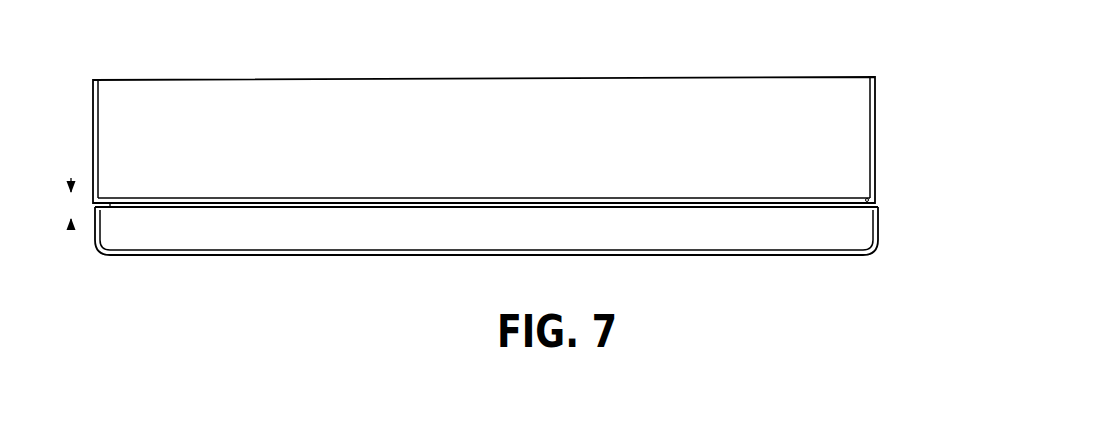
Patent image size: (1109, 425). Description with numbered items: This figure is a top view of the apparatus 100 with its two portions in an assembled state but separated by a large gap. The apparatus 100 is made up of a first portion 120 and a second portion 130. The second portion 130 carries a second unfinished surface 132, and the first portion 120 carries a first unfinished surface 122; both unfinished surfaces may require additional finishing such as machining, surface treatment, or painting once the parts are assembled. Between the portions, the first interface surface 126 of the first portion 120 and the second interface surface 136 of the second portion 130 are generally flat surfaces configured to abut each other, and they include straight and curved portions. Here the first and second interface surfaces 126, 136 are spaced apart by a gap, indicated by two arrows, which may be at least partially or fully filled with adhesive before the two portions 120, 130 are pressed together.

The apparatus 100 is at (65, 68).
The second portion 130 is at (887, 123).
The second unfinished surface 132 is at (484, 137).
The second interface surface 136 is at (173, 199).
The first portion 120 is at (887, 223).
The first unfinished surface 122 is at (486, 229).
The first interface surface 126 is at (180, 210).